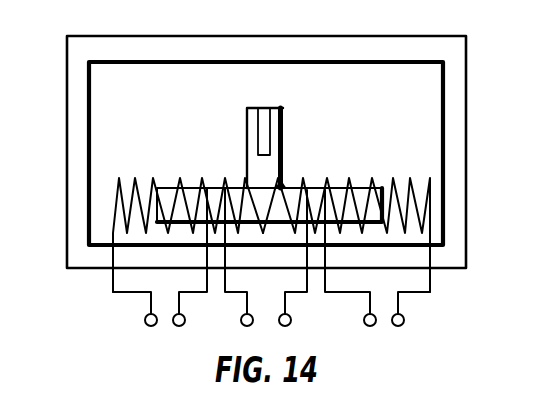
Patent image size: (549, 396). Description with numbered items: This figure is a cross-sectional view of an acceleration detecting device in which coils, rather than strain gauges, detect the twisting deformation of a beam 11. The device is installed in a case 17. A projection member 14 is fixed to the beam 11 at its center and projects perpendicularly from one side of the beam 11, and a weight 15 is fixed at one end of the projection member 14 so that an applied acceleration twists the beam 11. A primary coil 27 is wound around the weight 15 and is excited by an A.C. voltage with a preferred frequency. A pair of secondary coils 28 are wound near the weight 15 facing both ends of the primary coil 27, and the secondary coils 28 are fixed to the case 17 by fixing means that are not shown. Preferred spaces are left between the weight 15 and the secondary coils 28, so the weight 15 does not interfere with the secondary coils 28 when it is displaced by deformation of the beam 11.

The beam 11 is at (263, 124).
The projection member 14 is at (255, 163).
The weight 15 is at (258, 205).
The case 17 is at (447, 262).
The primary coil 27 is at (230, 200).
The secondary coils 28 is at (413, 187).